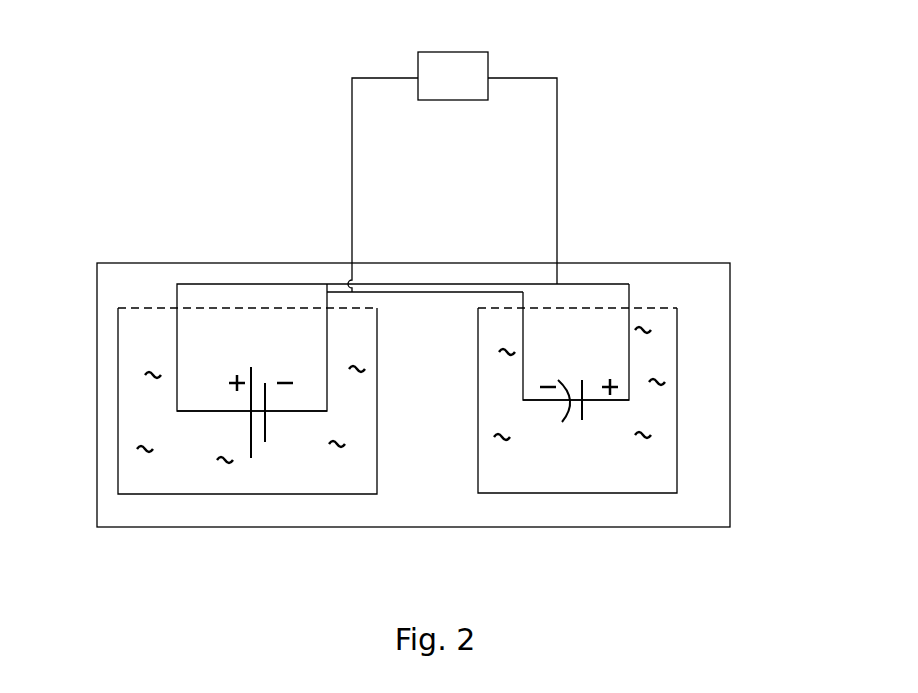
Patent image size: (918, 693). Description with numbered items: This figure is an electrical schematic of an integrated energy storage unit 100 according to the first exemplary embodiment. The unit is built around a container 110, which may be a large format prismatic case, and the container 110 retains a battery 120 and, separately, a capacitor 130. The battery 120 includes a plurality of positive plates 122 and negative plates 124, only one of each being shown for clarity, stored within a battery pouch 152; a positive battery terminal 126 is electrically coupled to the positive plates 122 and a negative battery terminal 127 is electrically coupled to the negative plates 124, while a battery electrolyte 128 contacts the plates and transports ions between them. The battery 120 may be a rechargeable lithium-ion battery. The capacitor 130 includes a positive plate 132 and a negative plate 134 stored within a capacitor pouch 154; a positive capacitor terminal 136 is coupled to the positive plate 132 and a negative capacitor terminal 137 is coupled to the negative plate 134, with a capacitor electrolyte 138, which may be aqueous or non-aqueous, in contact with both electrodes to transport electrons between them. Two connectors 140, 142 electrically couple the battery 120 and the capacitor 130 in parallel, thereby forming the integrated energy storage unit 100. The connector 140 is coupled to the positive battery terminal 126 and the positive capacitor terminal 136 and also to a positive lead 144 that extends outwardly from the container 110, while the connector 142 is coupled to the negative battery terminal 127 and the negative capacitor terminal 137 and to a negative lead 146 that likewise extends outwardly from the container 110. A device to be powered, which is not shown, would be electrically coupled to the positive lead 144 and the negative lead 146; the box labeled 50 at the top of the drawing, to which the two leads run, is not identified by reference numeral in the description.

The integrated energy storage unit 100 is at (598, 95).
The controller / power source 50 is at (453, 76).
The container 110 is at (380, 263).
The battery 120 is at (251, 367).
The positive plates 122 is at (250, 425).
The negative plates 124 is at (266, 433).
The positive battery terminal 126 is at (200, 413).
The negative battery terminal 127 is at (310, 412).
The battery electrolyte 128 is at (152, 353).
The capacitor 130 is at (593, 380).
The positive plate 132 is at (590, 422).
The negative plate 134 is at (577, 421).
The positive capacitor terminal 136 is at (677, 323).
The negative capacitor terminal 137 is at (548, 400).
The capacitor electrolyte 138 is at (657, 373).
The connector 140 is at (442, 284).
The connector 142 is at (472, 291).
The positive lead 144 is at (557, 165).
The negative lead 146 is at (352, 155).
The battery pouch 152 is at (377, 470).
The capacitor pouch 154 is at (670, 493).